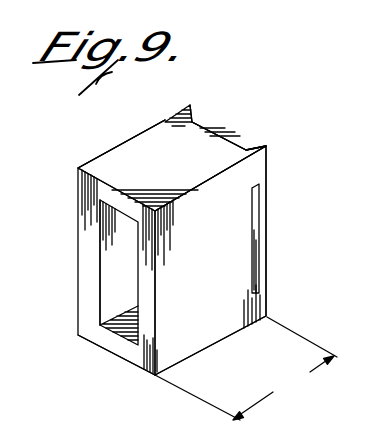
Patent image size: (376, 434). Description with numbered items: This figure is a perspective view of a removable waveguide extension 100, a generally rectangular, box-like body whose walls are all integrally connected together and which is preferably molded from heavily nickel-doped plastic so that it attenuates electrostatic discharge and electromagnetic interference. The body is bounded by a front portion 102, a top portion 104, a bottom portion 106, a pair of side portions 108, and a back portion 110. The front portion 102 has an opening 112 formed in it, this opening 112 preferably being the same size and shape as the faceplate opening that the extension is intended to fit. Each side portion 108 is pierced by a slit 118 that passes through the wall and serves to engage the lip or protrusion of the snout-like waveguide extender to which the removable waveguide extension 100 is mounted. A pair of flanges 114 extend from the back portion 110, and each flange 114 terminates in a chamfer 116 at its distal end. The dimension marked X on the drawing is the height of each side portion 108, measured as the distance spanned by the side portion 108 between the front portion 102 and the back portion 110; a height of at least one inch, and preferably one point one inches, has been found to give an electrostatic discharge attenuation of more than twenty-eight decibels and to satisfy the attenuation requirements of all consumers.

The removable waveguide extension 100 is at (279, 279).
The front portion 102 is at (102, 194).
The top portion 104 is at (133, 147).
The bottom portion 106 is at (130, 322).
The side portion 108 is at (200, 328).
The back portion 110 is at (221, 132).
The opening 112 is at (112, 264).
The flange 114 is at (189, 106).
The chamfer 116 is at (263, 148).
The slit 118 is at (258, 223).